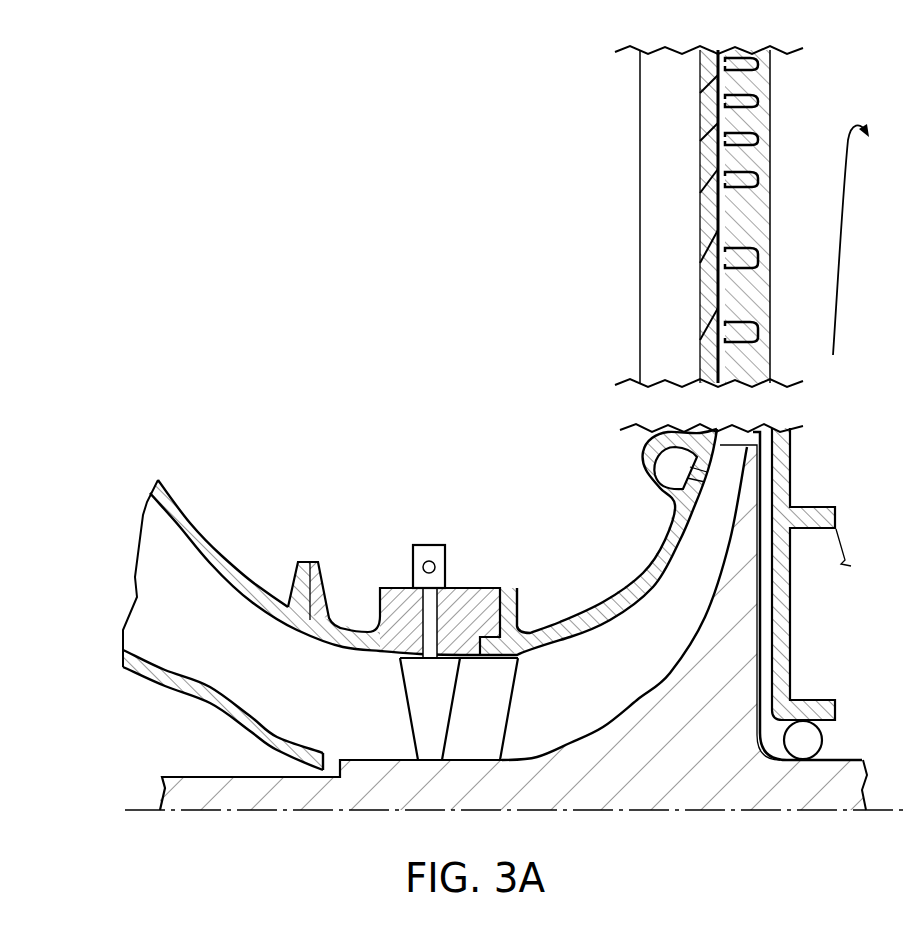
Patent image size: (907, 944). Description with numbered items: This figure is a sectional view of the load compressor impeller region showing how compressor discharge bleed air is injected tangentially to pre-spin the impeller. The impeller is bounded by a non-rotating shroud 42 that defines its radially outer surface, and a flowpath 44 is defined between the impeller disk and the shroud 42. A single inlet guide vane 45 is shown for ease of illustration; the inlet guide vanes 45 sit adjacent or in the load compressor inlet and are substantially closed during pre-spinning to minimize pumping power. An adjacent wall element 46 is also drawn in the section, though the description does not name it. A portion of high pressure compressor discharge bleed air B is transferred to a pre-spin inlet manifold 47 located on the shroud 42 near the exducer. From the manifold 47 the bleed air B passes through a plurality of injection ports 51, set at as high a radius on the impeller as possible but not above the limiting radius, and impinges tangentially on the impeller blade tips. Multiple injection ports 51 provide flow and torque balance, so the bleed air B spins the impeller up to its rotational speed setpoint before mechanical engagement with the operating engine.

The shroud 42 is at (603, 602).
The flowpath 44 is at (593, 696).
The inlet guide vanes 45 is at (404, 699).
The heat shield / shroud 46 is at (240, 571).
The pre-spin inlet manifold 47 is at (643, 476).
The injection ports 51 is at (750, 95).
The compressor discharge bleed air portion B is at (662, 331).